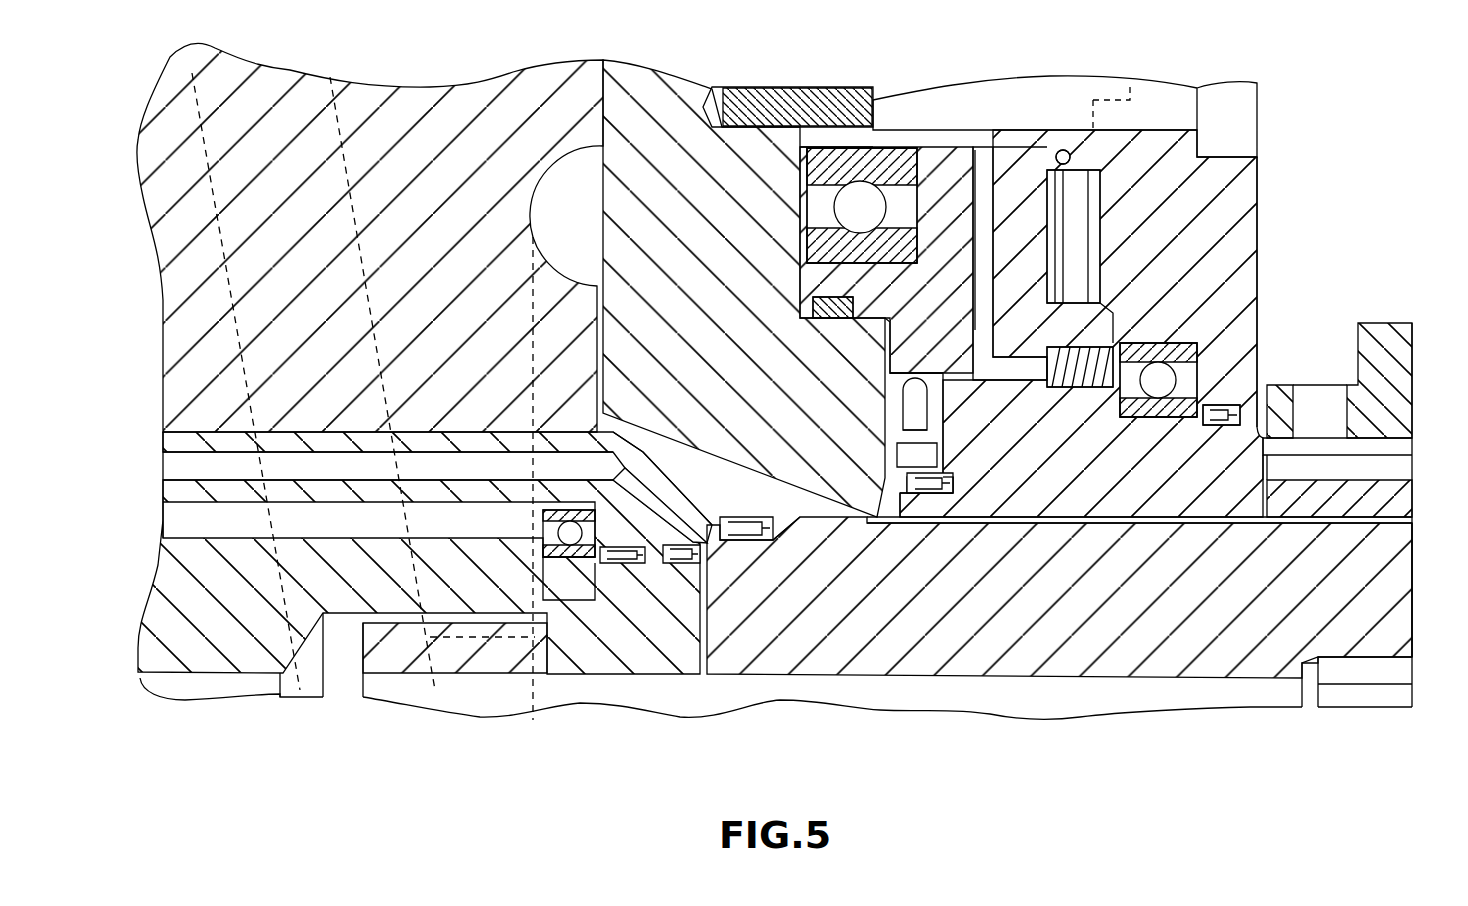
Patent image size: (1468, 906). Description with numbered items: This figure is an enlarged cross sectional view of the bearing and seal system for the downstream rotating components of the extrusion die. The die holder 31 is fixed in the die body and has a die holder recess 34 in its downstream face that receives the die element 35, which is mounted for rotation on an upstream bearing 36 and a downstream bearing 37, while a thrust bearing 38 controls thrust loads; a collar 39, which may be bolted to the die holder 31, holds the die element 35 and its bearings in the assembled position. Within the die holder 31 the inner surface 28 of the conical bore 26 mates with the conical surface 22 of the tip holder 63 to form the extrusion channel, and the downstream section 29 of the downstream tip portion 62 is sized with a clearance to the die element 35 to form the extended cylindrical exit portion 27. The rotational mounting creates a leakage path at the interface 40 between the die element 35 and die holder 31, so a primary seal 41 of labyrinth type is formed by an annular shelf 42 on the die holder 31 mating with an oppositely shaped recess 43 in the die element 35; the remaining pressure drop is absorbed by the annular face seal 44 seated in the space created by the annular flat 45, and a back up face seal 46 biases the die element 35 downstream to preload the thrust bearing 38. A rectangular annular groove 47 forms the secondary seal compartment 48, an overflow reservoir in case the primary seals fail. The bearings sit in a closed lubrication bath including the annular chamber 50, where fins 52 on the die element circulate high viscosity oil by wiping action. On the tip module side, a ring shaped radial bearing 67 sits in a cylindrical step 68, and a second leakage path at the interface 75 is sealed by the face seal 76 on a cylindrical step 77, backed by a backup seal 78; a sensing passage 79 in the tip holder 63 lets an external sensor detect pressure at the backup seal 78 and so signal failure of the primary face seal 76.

The conical surface 22 is at (690, 522).
The bore 26 is at (782, 510).
The exit portion 27 is at (1378, 524).
The surface 28 is at (1227, 528).
The surface 29 is at (1298, 528).
The die holder 31 is at (676, 162).
The die holder recess 34 is at (1065, 150).
The die element 35 is at (1120, 470).
The upstream bearing 36 is at (855, 205).
The downstream bearing 37 is at (1195, 340).
The thrust bearing 38 is at (1080, 212).
The collar 39 is at (1180, 245).
The interface 40 is at (1010, 488).
The primary seal 41 is at (1215, 403).
The annular shelf 42 is at (946, 524).
The recess 43 is at (966, 517).
The annular face seal 44 is at (860, 528).
The annular flat 45 is at (920, 495).
The back up face seal 46 is at (900, 470).
The annular groove 47 is at (872, 405).
The secondary seal compartment 48 is at (893, 383).
The annular chamber 50 is at (930, 160).
The fins 52 is at (990, 165).
The downstream tip portion 62 is at (1073, 600).
The tip holder 63 is at (706, 474).
The ring shaped radial bearing 67 is at (977, 210).
The cylindrical step 68 is at (590, 600).
The interface 75 is at (815, 520).
The face seal 76 is at (690, 565).
The cylindrical step 77 is at (745, 542).
The backup seal 78 is at (630, 565).
The sensing passage 79 is at (462, 467).